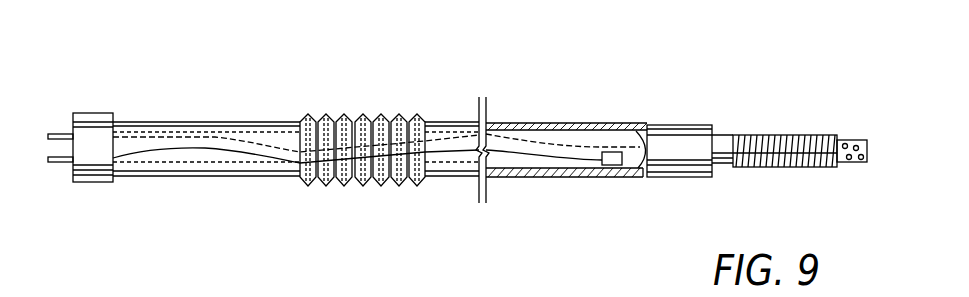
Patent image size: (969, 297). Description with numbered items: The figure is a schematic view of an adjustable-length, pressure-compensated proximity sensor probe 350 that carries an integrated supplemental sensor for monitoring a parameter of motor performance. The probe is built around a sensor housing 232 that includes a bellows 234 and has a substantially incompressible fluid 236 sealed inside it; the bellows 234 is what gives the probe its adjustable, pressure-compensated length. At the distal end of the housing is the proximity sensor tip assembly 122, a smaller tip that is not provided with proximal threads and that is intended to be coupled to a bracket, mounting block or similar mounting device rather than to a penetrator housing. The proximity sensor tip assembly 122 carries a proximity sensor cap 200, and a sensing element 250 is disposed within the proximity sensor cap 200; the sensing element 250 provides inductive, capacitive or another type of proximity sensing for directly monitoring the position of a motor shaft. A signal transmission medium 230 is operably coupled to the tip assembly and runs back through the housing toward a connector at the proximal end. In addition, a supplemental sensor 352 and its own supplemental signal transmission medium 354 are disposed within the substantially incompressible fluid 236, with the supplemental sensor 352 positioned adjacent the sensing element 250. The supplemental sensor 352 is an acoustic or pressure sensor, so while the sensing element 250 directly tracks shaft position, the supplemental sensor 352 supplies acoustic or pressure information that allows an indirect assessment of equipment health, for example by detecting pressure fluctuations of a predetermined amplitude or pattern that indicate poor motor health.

The signal transmission medium 230 is at (223, 137).
The supplemental signal transmission medium 354 is at (203, 150).
The bellows 234 is at (362, 118).
The substantially incompressible fluid 236 is at (583, 140).
The sensor housing 232 is at (538, 178).
The supplemental sensor 352 is at (612, 165).
The proximity sensor probe 350 is at (683, 97).
The proximity sensor tip assembly 122 is at (768, 117).
The sensing element 250 is at (845, 142).
The proximity sensor cap 200 is at (855, 165).